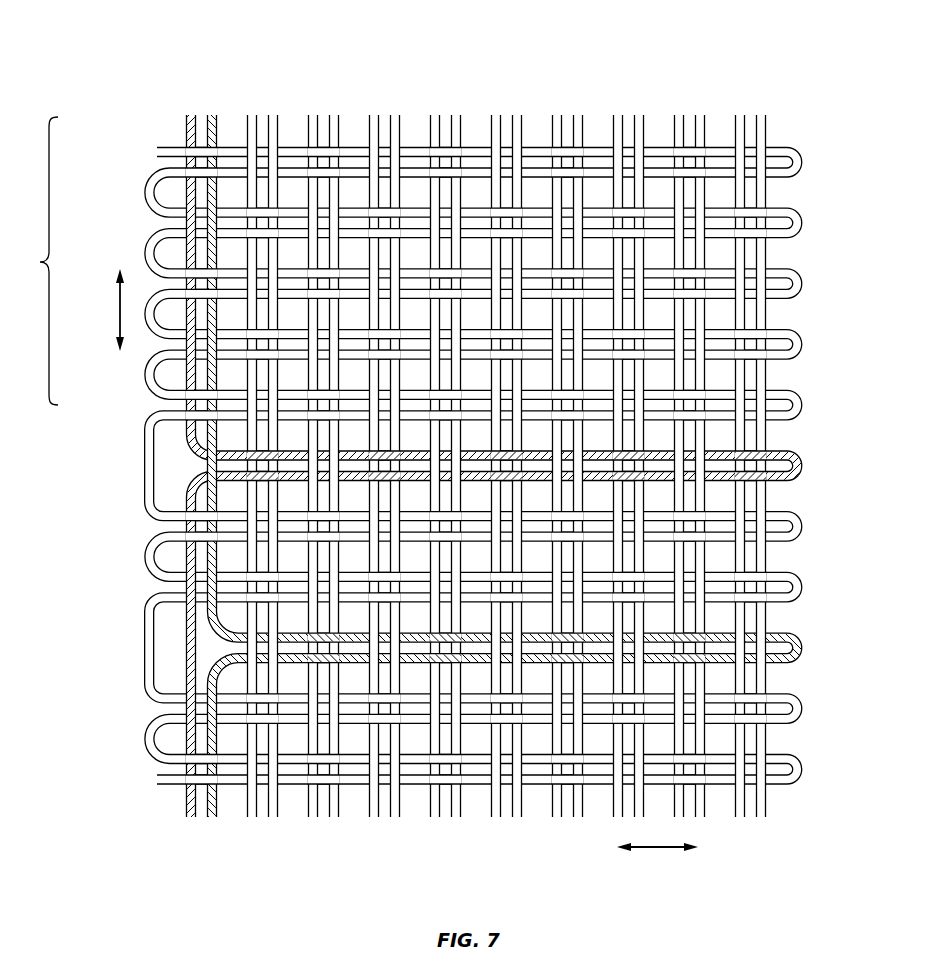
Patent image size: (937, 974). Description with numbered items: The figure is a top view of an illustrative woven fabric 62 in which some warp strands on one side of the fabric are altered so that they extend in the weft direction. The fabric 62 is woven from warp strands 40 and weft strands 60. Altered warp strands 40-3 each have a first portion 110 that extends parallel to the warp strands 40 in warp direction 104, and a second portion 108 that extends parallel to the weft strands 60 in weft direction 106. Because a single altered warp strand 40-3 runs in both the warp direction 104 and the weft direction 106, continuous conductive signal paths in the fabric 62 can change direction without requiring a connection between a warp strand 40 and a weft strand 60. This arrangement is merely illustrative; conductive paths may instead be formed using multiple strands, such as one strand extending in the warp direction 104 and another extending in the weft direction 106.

The fabric 62 is at (172, 66).
The warp strands 40 is at (767, 127).
The altered warp strands 40-3 is at (185, 803).
The weft strands 60 is at (802, 157).
The warp direction 104 is at (115, 299).
The weft direction 106 is at (657, 850).
The second portion 108 is at (816, 430).
The first portion 110 is at (33, 261).